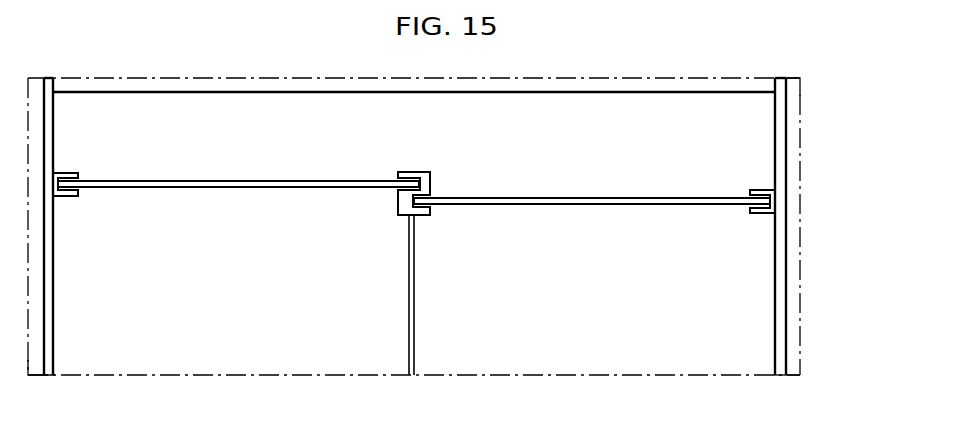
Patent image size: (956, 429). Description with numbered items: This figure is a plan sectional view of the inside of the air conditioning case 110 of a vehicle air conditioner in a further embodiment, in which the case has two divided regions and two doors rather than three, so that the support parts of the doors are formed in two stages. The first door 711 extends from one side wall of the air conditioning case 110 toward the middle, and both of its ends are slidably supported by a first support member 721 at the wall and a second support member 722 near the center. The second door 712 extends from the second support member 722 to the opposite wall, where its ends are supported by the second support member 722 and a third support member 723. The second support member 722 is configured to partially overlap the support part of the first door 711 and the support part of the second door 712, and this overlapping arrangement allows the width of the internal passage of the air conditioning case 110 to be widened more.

The air conditioning case 110 is at (786, 271).
The first door 711 is at (185, 187).
The second door 712 is at (595, 205).
The first support member 721 is at (65, 173).
The second support member 722 is at (415, 172).
The third support member 723 is at (765, 190).